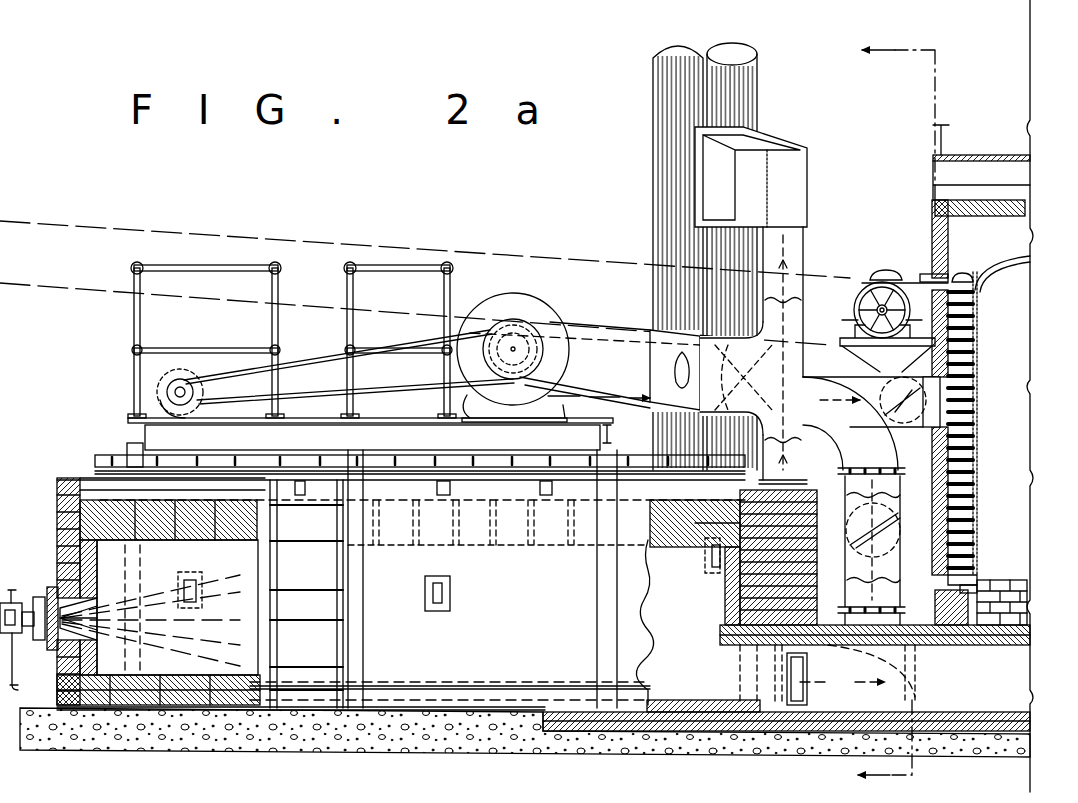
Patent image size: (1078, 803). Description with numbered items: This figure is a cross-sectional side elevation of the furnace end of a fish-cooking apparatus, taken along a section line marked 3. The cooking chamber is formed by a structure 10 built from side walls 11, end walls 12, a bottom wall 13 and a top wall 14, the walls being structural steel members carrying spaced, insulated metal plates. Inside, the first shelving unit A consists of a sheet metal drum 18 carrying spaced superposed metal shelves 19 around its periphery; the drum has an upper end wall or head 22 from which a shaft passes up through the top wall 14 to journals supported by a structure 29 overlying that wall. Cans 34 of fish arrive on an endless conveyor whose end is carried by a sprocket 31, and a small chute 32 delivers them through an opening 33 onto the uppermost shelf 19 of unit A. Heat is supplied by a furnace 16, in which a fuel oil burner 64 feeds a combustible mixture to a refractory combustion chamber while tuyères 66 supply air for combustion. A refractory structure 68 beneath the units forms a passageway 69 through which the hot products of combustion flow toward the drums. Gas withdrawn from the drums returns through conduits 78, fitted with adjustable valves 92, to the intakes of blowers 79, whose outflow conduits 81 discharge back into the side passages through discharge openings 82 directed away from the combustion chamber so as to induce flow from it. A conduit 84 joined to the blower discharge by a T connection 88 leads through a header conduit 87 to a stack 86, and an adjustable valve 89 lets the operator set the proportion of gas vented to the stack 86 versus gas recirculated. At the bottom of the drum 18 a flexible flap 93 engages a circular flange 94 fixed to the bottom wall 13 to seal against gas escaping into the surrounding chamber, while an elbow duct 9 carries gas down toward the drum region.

The section line 3- 3 is at (881, 415).
The elbow duct 9 is at (866, 376).
The structure 10 is at (930, 228).
The side walls 11 is at (902, 392).
The end walls 12 is at (948, 230).
The bottom wall 13 is at (1024, 590).
The top wall 14 is at (968, 203).
The furnace 16 is at (57, 552).
The drum 18 is at (978, 384).
The shelves 19 is at (965, 462).
The upper end wall or head 22 is at (1015, 263).
The structure 29 is at (968, 157).
The sprocket 31 is at (856, 293).
The chute 32 is at (925, 295).
The opening 33 is at (940, 272).
The cans 34 is at (883, 270).
The fuel oil burner 64 is at (35, 600).
The tuyères 66 is at (197, 580).
The refractory structure 68 is at (975, 648).
The passageway 69 is at (185, 669).
The conduits 78 is at (587, 335).
The blowers 79 is at (533, 305).
The outflow conduits 81 is at (638, 410).
The discharge openings 82 is at (808, 664).
The conduit 84 is at (807, 228).
The stack 86 is at (757, 84).
The header conduit 87 is at (807, 152).
The T connection 88 is at (803, 358).
The adjustable valve 89 is at (745, 360).
The adjustable valves 92 is at (884, 514).
The flexible flap 93 is at (965, 575).
The circular flange 94 is at (962, 586).
The unit A is at (988, 306).